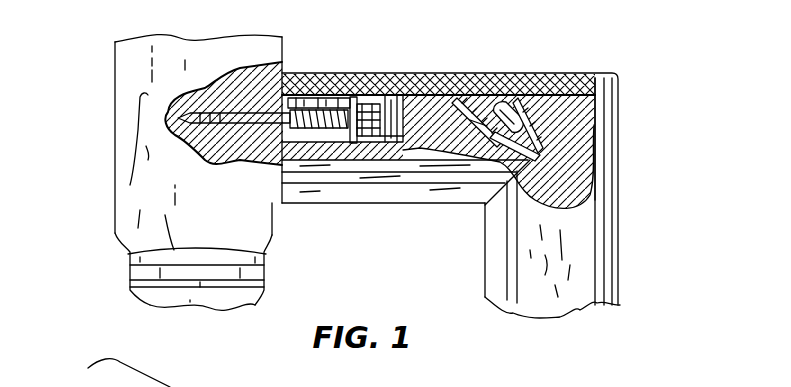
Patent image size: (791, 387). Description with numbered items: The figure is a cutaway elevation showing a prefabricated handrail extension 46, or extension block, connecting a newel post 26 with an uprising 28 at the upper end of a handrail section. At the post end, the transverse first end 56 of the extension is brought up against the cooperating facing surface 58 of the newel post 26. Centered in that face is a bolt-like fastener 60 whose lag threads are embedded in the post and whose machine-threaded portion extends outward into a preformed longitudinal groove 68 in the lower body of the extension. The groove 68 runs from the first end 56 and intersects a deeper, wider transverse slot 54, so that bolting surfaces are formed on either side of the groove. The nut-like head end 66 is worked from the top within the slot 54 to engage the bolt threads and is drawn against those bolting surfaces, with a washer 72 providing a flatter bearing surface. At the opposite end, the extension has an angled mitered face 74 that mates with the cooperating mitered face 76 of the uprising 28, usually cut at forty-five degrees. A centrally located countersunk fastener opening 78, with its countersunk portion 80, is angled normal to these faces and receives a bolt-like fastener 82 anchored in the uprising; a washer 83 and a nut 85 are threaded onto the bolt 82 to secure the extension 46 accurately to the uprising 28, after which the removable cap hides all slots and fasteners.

The newel post 26 is at (130, 62).
The uprising 28 is at (622, 232).
The handrail extension 46 is at (622, 62).
The transverse slot 54 is at (388, 107).
The transverse first end 56 is at (272, 160).
The facing surface 58 is at (285, 50).
The bolt-like fastener 60 is at (258, 77).
The head end 66 is at (380, 142).
The longitudinal groove 68 is at (335, 102).
The washer 72 is at (358, 143).
The mitered face 74 is at (600, 88).
The face of uprising 76 is at (597, 75).
The countersunk fastener opening 78 is at (541, 100).
The countersunk portion 80 is at (482, 120).
The bolt-like fastener 82 is at (560, 130).
The washer 83 is at (470, 120).
The nut 85 is at (506, 112).